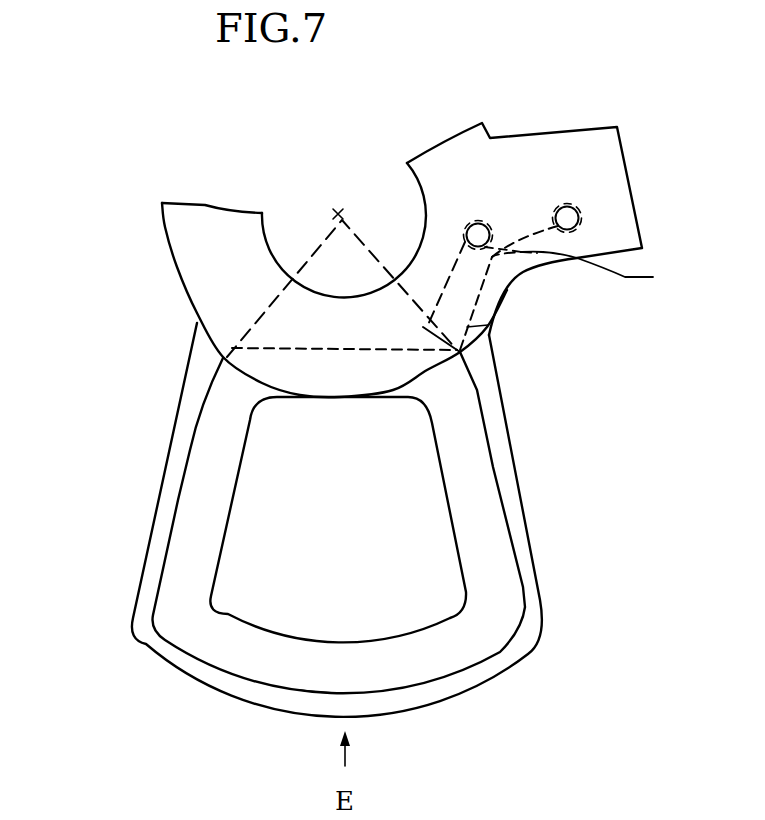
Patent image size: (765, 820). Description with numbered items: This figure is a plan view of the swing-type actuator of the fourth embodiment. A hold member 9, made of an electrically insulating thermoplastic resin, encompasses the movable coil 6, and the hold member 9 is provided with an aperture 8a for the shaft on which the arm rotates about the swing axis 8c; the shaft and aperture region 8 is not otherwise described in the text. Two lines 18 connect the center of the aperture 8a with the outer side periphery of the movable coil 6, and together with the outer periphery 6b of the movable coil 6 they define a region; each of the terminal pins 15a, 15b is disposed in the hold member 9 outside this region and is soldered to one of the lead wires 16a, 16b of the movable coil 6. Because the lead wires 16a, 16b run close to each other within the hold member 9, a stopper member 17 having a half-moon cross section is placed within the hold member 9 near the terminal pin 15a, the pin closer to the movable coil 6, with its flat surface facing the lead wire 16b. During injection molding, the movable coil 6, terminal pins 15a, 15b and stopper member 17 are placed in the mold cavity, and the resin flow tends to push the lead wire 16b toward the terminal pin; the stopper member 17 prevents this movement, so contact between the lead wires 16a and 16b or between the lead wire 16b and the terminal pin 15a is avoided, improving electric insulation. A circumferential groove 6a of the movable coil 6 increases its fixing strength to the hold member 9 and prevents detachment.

The movable coil 6 is at (483, 512).
The circumferential groove 6a is at (172, 518).
The outer periphery 6b is at (407, 635).
The head portion 8 is at (437, 242).
The aperture 8a is at (275, 258).
The swing axis 8c is at (338, 214).
The hold member 9 is at (358, 237).
The terminal pin 15a is at (478, 223).
The terminal pin 15b is at (563, 206).
The lead wire 16a is at (460, 353).
The lead wire 16b is at (460, 353).
The stopper member 17 is at (653, 277).
The lines 18 is at (270, 293).